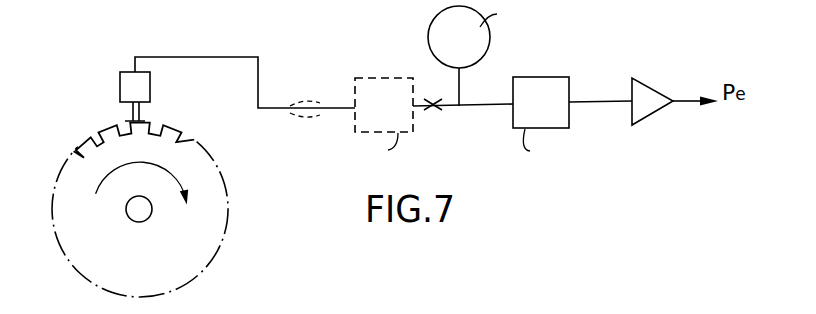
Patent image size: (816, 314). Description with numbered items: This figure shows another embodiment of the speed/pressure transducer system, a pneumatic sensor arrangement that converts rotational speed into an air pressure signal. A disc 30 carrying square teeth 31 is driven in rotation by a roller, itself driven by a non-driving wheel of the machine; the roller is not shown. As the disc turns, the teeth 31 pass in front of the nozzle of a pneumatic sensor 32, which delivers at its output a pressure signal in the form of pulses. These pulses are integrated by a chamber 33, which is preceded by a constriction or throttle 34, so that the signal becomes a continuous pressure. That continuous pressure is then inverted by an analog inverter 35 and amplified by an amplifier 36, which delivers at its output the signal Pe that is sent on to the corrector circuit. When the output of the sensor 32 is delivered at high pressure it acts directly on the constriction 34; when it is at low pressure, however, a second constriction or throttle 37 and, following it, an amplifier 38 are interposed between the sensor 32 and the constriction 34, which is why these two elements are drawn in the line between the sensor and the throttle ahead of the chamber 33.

The disc 30 is at (213, 192).
The square teeth 31 is at (100, 133).
The pneumatic sensor 32 is at (128, 84).
The chamber 33 is at (506, 55).
The constriction or throttle 34 is at (428, 114).
The analog inverter 35 is at (562, 128).
The amplifier 36 is at (648, 93).
The second constriction or throttle 37 is at (314, 100).
The amplifier 38 is at (347, 121).